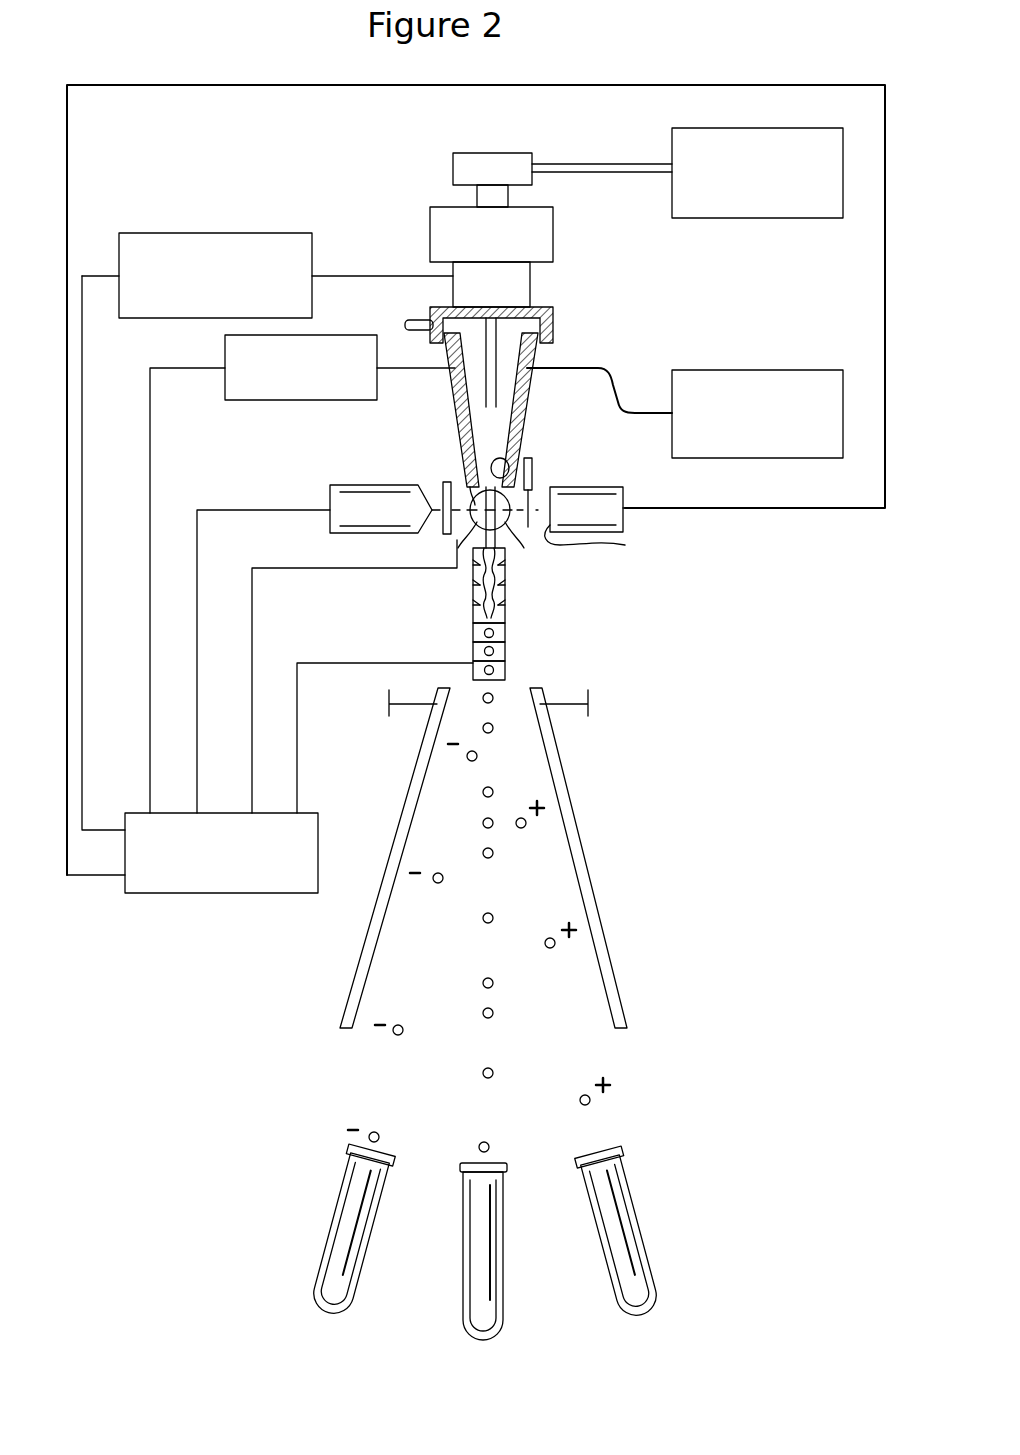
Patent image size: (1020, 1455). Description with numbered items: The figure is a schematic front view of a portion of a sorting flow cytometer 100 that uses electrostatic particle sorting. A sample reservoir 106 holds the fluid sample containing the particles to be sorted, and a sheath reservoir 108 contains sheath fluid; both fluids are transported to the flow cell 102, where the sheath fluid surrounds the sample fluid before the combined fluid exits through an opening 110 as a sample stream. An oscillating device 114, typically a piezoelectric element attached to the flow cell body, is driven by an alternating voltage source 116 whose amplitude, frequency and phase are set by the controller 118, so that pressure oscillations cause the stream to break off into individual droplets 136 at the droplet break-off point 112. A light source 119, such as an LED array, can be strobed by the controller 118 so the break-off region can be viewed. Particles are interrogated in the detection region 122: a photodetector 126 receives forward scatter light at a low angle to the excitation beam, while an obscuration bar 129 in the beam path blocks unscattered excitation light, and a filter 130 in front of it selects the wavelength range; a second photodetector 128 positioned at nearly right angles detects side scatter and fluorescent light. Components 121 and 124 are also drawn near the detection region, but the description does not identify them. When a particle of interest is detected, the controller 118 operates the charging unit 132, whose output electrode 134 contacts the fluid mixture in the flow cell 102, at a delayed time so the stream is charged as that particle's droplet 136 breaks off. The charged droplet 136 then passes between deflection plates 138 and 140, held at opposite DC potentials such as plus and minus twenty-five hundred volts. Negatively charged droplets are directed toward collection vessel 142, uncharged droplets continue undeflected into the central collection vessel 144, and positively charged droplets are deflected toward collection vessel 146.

The sorting flow cytometer 100 is at (760, 768).
The flow cell 102 is at (520, 331).
The sample reservoir 106 is at (765, 218).
The sheath reservoir 108 is at (720, 370).
The opening 110 is at (506, 460).
The droplet break-off point 112 is at (505, 600).
The oscillating device 114 is at (530, 292).
The alternating voltage source 116 is at (198, 233).
The controller 118 is at (148, 893).
The light source 119 is at (505, 655).
The light source 121 is at (330, 490).
The detection region 122 is at (470, 487).
The optical element 124 is at (444, 482).
The photodetector 126 is at (623, 492).
The photodetector 128 is at (508, 528).
The obscuration bar 129 is at (536, 480).
The filter 130 is at (625, 545).
The charging unit 132 is at (328, 335).
The output electrode 134 is at (397, 367).
The droplet 136 is at (505, 630).
The deflection plate 138 is at (350, 962).
The deflection plate 140 is at (592, 855).
The collection vessel 142 is at (313, 1272).
The central collection vessel 144 is at (462, 1305).
The collection vessel 146 is at (647, 1250).